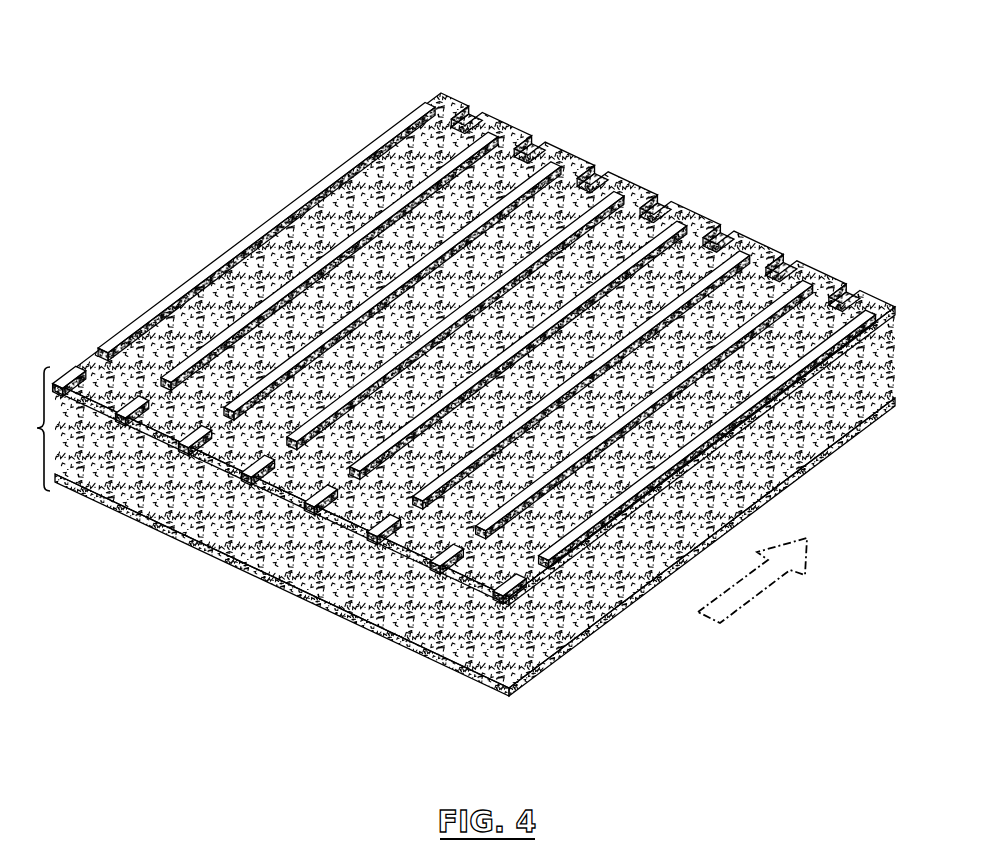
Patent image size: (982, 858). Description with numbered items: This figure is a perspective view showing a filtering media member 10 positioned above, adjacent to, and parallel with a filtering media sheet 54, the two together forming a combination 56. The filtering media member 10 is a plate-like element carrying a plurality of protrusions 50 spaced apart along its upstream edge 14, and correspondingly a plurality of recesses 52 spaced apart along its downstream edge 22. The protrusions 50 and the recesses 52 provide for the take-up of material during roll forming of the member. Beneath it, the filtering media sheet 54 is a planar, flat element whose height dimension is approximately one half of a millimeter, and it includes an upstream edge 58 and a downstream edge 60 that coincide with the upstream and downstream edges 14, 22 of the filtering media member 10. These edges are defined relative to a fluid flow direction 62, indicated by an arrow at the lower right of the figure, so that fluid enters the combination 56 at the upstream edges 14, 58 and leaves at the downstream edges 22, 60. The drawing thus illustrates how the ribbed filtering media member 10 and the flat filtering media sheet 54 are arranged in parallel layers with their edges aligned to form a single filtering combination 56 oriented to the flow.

The filtering media member 10 is at (464, 353).
The upstream edge 14 is at (396, 566).
The downstream edge 22 is at (466, 339).
The protrusions 50 is at (260, 463).
The recesses 52 is at (591, 168).
The filtering media sheet 54 is at (487, 510).
The combination 56 is at (29, 429).
The upstream edge 58 is at (418, 667).
The downstream edge 60 is at (865, 371).
The fluid flow direction 62 is at (765, 590).